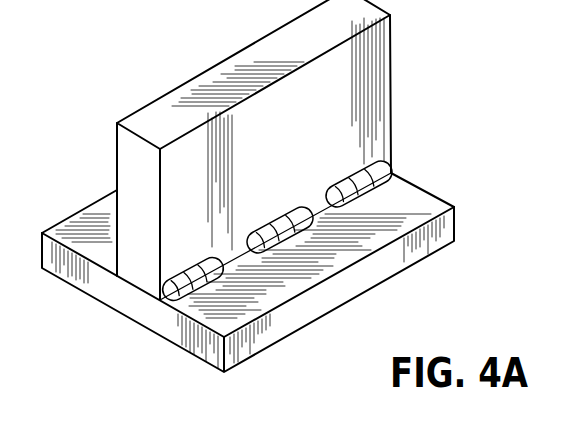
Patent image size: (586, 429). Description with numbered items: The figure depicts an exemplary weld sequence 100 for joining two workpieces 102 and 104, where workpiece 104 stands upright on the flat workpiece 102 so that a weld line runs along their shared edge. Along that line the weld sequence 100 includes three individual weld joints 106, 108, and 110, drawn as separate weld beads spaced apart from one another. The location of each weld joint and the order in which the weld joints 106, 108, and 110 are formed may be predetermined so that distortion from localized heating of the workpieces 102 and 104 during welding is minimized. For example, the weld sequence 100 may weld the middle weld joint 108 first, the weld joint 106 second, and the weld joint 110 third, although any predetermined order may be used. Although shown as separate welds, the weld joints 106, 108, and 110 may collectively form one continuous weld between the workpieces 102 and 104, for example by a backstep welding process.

The weld sequence 100 is at (92, 50).
The workpiece 102 is at (328, 305).
The workpiece 104 is at (220, 65).
The weld joint 106 is at (393, 163).
The weld joint 108 is at (287, 220).
The weld joint 110 is at (160, 300).